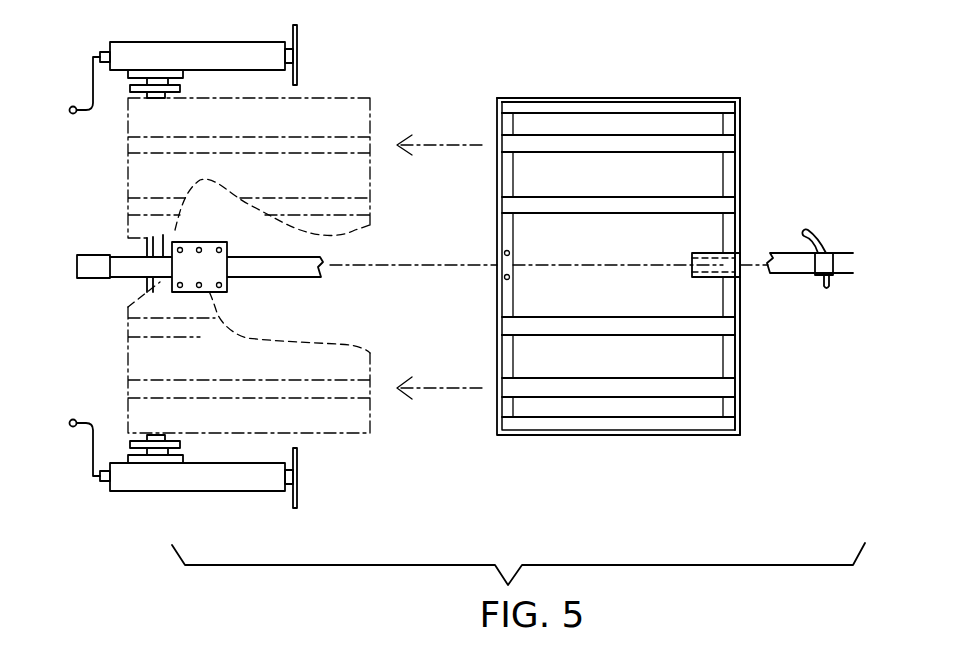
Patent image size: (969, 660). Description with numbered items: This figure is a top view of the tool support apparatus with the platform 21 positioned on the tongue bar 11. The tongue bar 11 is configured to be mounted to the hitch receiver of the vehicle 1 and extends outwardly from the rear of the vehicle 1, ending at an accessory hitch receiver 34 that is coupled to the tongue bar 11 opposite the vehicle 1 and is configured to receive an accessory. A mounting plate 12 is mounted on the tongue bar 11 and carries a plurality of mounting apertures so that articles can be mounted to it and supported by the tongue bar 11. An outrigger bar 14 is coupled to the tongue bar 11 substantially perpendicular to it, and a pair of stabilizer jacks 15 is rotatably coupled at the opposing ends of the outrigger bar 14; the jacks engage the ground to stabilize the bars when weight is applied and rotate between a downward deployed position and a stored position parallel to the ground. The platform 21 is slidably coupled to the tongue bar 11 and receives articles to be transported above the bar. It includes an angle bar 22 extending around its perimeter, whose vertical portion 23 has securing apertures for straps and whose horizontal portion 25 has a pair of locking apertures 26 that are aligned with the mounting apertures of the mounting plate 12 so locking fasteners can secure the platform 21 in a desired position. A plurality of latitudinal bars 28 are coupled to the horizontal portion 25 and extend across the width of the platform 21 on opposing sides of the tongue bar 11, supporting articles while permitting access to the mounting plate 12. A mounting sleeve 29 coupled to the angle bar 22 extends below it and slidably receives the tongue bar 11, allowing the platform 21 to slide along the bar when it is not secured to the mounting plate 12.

The vehicle 1 is at (847, 265).
The tongue bar 11 is at (292, 272).
The mounting plate 12 is at (196, 262).
The outrigger bar 14 is at (148, 253).
The stabilizer jacks 15 is at (193, 42).
The platform 21 is at (740, 98).
The angle bar 22 is at (740, 183).
The vertical portion 23 is at (695, 100).
The horizontal portion 25 is at (625, 107).
The locking apertures 26 is at (504, 253).
The latitudinal bars 28 is at (528, 150).
The mounting sleeve 29 is at (706, 278).
The accessory hitch receiver 34 is at (92, 272).